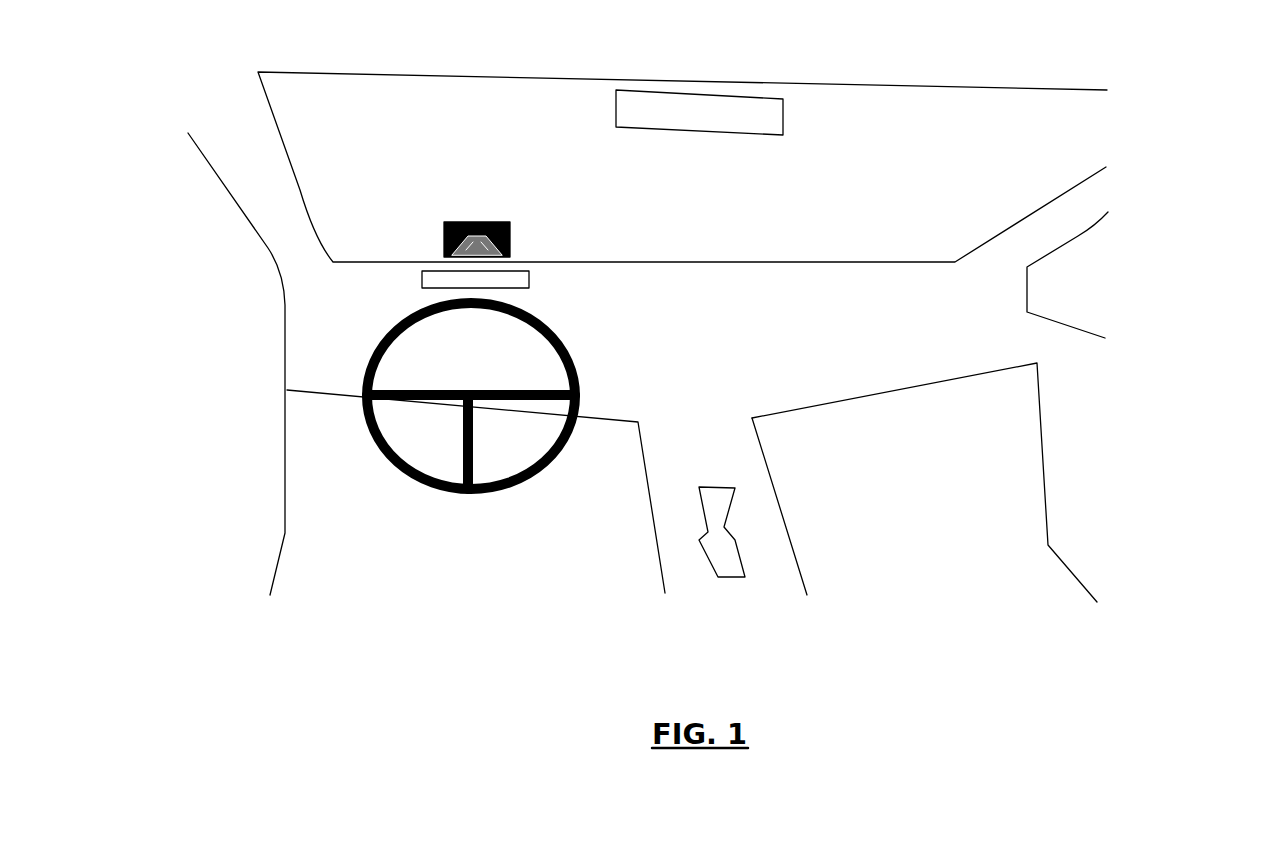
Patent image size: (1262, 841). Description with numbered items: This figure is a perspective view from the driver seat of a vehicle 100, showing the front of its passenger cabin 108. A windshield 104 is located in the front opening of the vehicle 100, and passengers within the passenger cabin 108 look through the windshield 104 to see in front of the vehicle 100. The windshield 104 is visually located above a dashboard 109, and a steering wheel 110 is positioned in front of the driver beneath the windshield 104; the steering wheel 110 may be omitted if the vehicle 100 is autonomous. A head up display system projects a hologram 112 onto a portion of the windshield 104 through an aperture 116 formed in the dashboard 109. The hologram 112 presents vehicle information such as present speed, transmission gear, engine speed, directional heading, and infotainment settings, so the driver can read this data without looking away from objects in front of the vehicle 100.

The vehicle 100 is at (242, 122).
The windshield 104 is at (393, 192).
The passenger cabin 108 is at (1067, 480).
The dashboard 109 is at (357, 307).
The steering wheel 110 is at (552, 330).
The hologram 112 is at (425, 227).
The aperture 116 is at (422, 280).